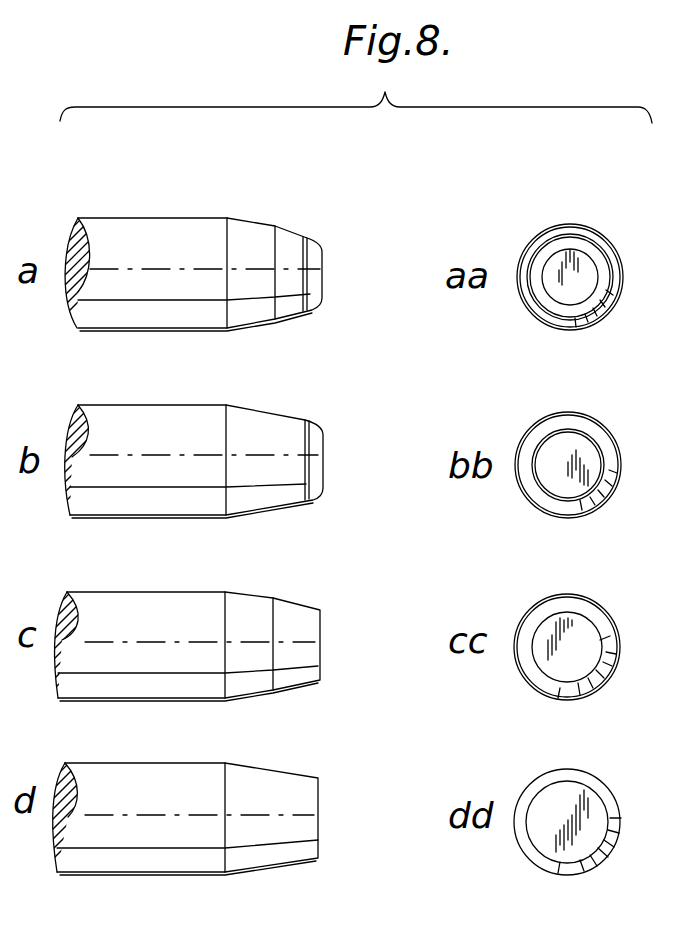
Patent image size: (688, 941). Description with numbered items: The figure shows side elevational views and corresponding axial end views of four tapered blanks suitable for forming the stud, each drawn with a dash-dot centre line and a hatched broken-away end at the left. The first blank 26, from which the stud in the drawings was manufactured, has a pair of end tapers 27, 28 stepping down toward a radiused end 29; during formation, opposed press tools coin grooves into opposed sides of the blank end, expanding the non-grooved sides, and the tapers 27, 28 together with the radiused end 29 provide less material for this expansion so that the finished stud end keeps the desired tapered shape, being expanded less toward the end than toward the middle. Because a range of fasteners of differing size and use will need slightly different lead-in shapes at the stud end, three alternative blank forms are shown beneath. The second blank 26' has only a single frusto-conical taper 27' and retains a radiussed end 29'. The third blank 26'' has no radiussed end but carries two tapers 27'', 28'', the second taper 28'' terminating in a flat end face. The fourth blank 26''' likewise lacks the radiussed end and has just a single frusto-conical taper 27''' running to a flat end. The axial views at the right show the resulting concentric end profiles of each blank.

The tapered blank 26 is at (181, 255).
The end taper 27 is at (194, 332).
The end taper 28 is at (322, 272).
The radiused end 29 is at (334, 253).
The blank 26' is at (181, 438).
The frusto-conical taper 27' is at (188, 516).
The radiussed end 29' is at (339, 448).
The blank 26'' is at (174, 629).
The taper 27'' is at (188, 704).
The taper 28'' is at (326, 644).
The blank 26''' is at (172, 800).
The frusto-conical taper 27''' is at (187, 877).